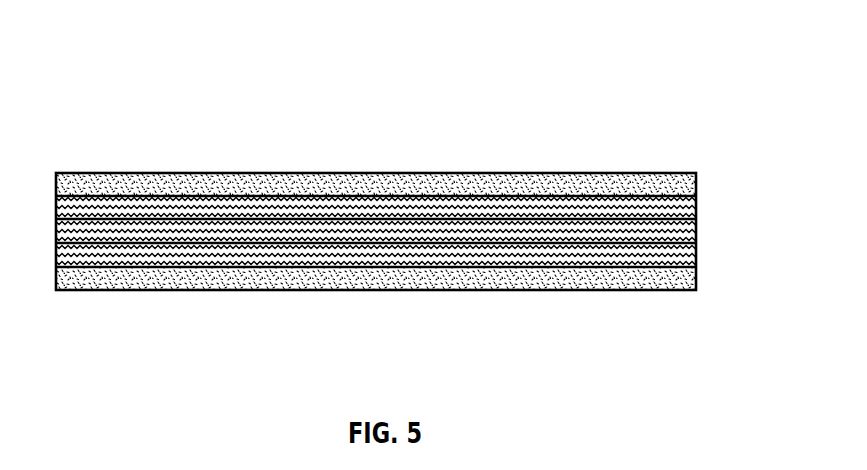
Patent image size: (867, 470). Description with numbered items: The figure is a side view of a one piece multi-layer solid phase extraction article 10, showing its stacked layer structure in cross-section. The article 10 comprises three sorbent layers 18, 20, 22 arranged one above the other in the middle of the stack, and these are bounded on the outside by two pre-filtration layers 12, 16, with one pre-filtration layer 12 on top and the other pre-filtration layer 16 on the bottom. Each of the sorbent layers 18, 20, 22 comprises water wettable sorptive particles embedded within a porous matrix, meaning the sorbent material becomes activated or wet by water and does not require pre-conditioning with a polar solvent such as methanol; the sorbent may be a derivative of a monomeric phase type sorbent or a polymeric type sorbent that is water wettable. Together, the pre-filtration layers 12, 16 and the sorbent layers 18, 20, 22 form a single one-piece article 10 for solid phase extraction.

The one piece multi-layer solid phase extraction article 10 is at (567, 92).
The pre-filtration layer 12 is at (643, 188).
The pre-filtration layer 16 is at (545, 282).
The sorbent layer 18 is at (671, 209).
The sorbent layer 20 is at (677, 227).
The sorbent layer 22 is at (683, 248).